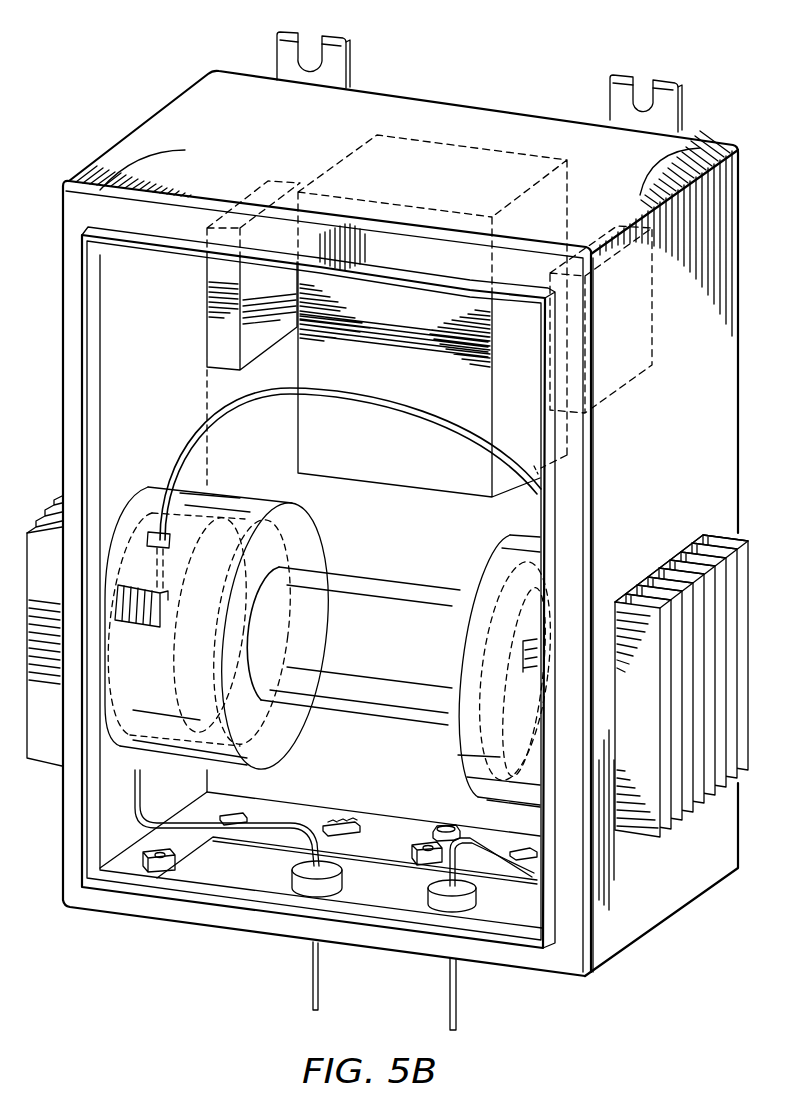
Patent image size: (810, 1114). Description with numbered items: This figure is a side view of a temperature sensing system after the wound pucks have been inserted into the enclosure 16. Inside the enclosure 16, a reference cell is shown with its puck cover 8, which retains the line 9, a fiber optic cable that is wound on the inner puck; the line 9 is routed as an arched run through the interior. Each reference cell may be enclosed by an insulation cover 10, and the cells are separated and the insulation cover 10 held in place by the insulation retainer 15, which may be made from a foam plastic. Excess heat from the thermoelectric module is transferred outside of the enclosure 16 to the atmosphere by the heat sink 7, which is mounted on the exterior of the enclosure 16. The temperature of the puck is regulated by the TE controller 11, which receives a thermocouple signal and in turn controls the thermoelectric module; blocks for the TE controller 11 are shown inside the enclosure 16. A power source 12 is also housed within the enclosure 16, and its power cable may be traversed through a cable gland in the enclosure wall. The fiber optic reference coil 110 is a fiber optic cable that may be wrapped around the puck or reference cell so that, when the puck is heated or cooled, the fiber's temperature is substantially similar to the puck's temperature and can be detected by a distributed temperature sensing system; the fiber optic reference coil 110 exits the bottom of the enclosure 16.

The heat sink 7 is at (750, 650).
The puck cover 8 is at (212, 522).
The line 9 is at (182, 447).
The insulation cover 10 is at (286, 752).
The TE controller 11 is at (215, 336).
The power source 12 is at (408, 382).
The insulation retainer 15 is at (378, 578).
The enclosure 16 is at (730, 444).
The fiber optic reference coil 110 is at (311, 975).